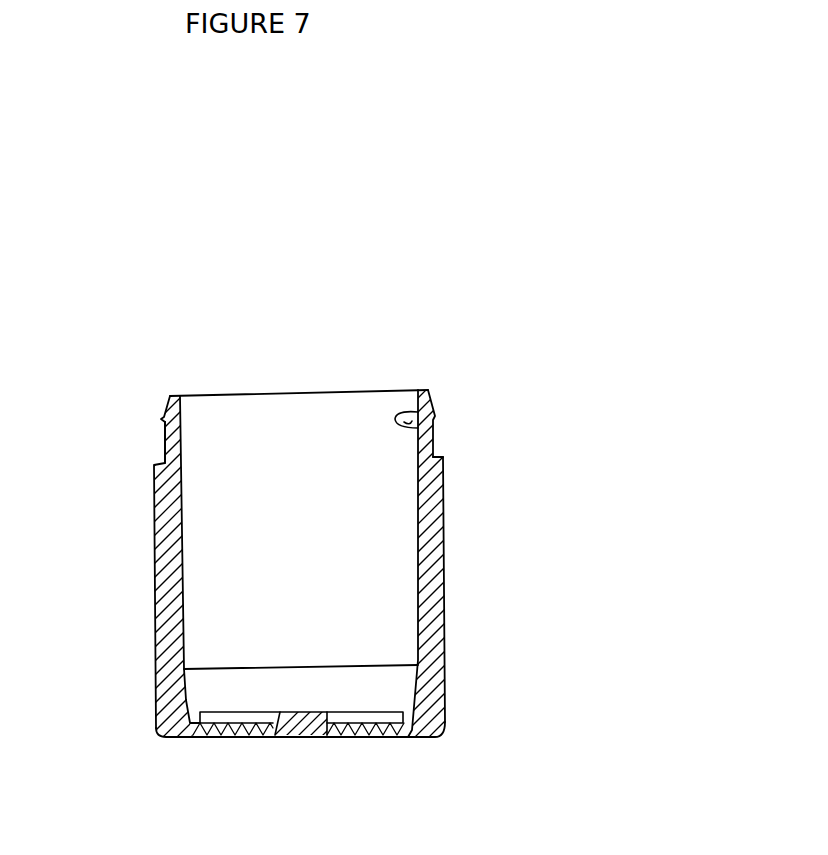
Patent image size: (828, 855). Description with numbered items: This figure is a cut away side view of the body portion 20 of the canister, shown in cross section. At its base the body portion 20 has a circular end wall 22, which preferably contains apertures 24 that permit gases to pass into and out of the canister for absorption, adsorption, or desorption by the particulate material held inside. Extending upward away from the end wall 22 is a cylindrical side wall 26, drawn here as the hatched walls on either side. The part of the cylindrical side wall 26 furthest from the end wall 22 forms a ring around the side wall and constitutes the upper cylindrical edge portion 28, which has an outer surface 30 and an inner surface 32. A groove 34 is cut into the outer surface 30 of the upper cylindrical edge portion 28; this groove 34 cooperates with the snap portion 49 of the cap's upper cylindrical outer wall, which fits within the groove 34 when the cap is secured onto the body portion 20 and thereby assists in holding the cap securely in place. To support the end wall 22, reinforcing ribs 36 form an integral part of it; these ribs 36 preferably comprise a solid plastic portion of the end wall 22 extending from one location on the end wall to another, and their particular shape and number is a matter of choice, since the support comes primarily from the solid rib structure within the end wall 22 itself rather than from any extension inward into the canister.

The body portion 20 is at (571, 470).
The circular end wall 22 is at (183, 740).
The apertures 24 is at (373, 736).
The cylindrical side wall 26 is at (435, 583).
The upper cylindrical edge portion 28 is at (443, 420).
The outer surface 30 is at (444, 447).
The inner surface 32 is at (432, 414).
The groove 34 is at (162, 450).
The reinforcing ribs 36 is at (233, 717).
The snap portion 49 is at (154, 444).